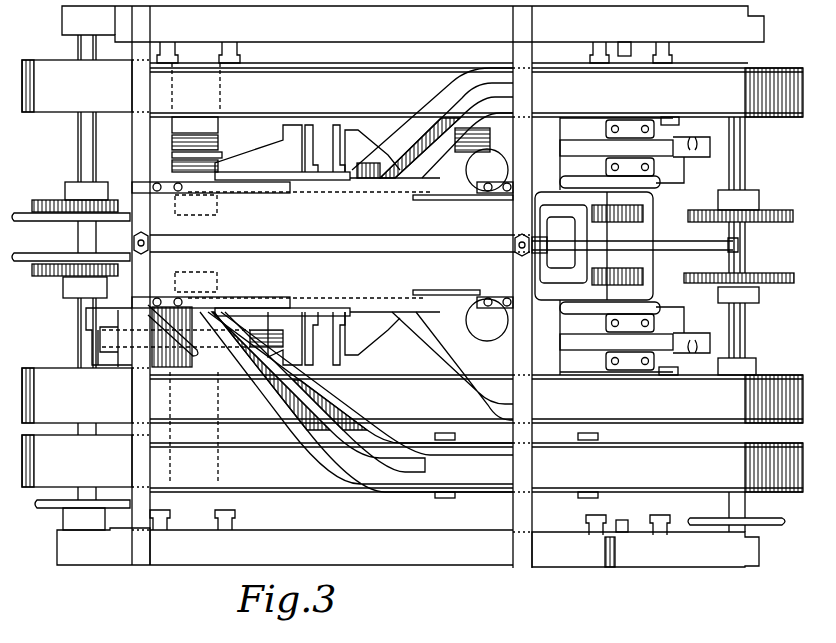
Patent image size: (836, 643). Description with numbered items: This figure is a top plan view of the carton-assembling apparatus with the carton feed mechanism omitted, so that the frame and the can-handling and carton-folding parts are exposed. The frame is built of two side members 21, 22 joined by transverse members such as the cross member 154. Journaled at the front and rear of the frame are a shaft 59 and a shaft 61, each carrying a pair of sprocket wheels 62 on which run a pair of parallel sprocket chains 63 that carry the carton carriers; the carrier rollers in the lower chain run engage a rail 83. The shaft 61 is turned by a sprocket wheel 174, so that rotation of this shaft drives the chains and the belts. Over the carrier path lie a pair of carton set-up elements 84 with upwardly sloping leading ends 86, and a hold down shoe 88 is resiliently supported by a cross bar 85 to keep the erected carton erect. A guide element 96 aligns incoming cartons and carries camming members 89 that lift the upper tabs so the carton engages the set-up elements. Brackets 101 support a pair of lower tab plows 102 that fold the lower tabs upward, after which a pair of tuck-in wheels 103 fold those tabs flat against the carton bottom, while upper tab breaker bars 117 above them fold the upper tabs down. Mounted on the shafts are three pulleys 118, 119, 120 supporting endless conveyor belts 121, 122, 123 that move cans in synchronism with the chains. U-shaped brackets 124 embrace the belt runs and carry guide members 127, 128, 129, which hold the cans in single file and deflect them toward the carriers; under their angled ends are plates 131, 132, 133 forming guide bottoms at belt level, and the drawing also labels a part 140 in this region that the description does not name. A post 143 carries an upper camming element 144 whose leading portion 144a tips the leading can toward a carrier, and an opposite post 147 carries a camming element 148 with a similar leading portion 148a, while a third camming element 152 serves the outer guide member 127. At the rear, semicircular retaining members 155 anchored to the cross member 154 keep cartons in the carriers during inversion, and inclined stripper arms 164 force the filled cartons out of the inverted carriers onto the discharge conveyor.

The side member 21 is at (408, 538).
The side member 22 is at (413, 34).
The shaft 59 is at (745, 324).
The shaft 61 is at (81, 147).
The sprocket wheel 62 is at (65, 195).
The sprocket chain 63 is at (32, 205).
The rail 83 is at (713, 250).
The carton set-up element 84 is at (552, 271).
The cross bar 85 is at (513, 212).
The leading end 86 is at (637, 216).
The hold down shoe 88 is at (460, 244).
The camming member 89 is at (592, 178).
The guide element 96 is at (684, 183).
The bracket 101 is at (566, 148).
The lower tab plow 102 is at (578, 350).
The tuck-in wheel 103 is at (487, 245).
The upper tab breaker bar 117 is at (440, 200).
The conveyor belt pulley 118 is at (792, 505).
The conveyor belt pulley 119 is at (795, 375).
The conveyor belt pulley 120 is at (795, 68).
The conveyor belt 121 is at (476, 467).
The conveyor belt 122 is at (476, 399).
The conveyor belt 123 is at (476, 92).
The U-shaped bracket 124 is at (689, 72).
The guide member 127 is at (694, 447).
The guide member 128 is at (692, 379).
The guide member 129 is at (644, 72).
The plate 131 is at (335, 415).
The plate 132 is at (428, 384).
The plate 133 is at (417, 115).
The strip 140 is at (485, 90).
The post 143 is at (325, 305).
The camming element 144 is at (290, 300).
The leading portion 144a is at (380, 358).
The post 147 is at (312, 128).
The camming element 148 is at (276, 152).
The leading portion 148a is at (377, 137).
The camming element 152 is at (190, 358).
The cross member 154 is at (150, 397).
The retaining member 155 is at (50, 222).
The stripper arm 164 is at (246, 194).
The sprocket wheel 174 is at (45, 512).